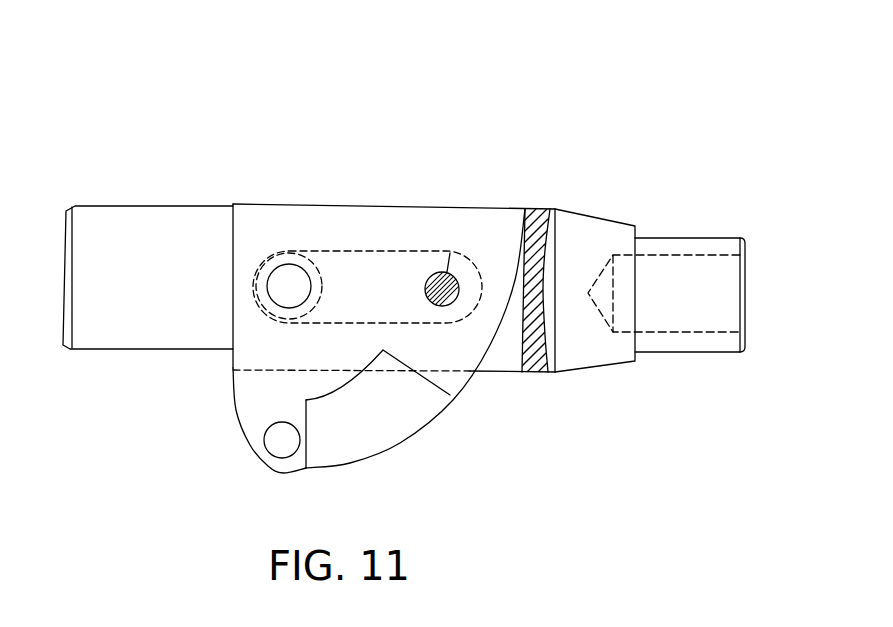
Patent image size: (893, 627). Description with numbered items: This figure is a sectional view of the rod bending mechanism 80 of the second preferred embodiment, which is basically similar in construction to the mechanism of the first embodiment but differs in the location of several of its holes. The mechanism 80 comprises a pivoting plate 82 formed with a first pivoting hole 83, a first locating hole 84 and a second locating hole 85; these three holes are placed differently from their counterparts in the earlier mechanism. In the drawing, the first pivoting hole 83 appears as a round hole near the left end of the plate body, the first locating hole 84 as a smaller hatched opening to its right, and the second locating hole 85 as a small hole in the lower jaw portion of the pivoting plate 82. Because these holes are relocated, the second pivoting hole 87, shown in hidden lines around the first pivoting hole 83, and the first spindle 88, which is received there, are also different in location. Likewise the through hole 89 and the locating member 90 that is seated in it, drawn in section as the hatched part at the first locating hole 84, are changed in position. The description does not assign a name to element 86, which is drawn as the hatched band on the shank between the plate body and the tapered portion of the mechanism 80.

The rod bending mechanism 80 is at (258, 120).
The pivoting plate 82 is at (260, 398).
The first pivoting hole 83 is at (292, 265).
The second pivoting hole 87 is at (318, 229).
The first locating hole 84 is at (450, 253).
The through hole 89 is at (497, 206).
The second locating hole 85 is at (272, 458).
The hatched collar 86 is at (500, 360).
The first spindle 88 is at (280, 278).
The locating member 90 is at (447, 307).